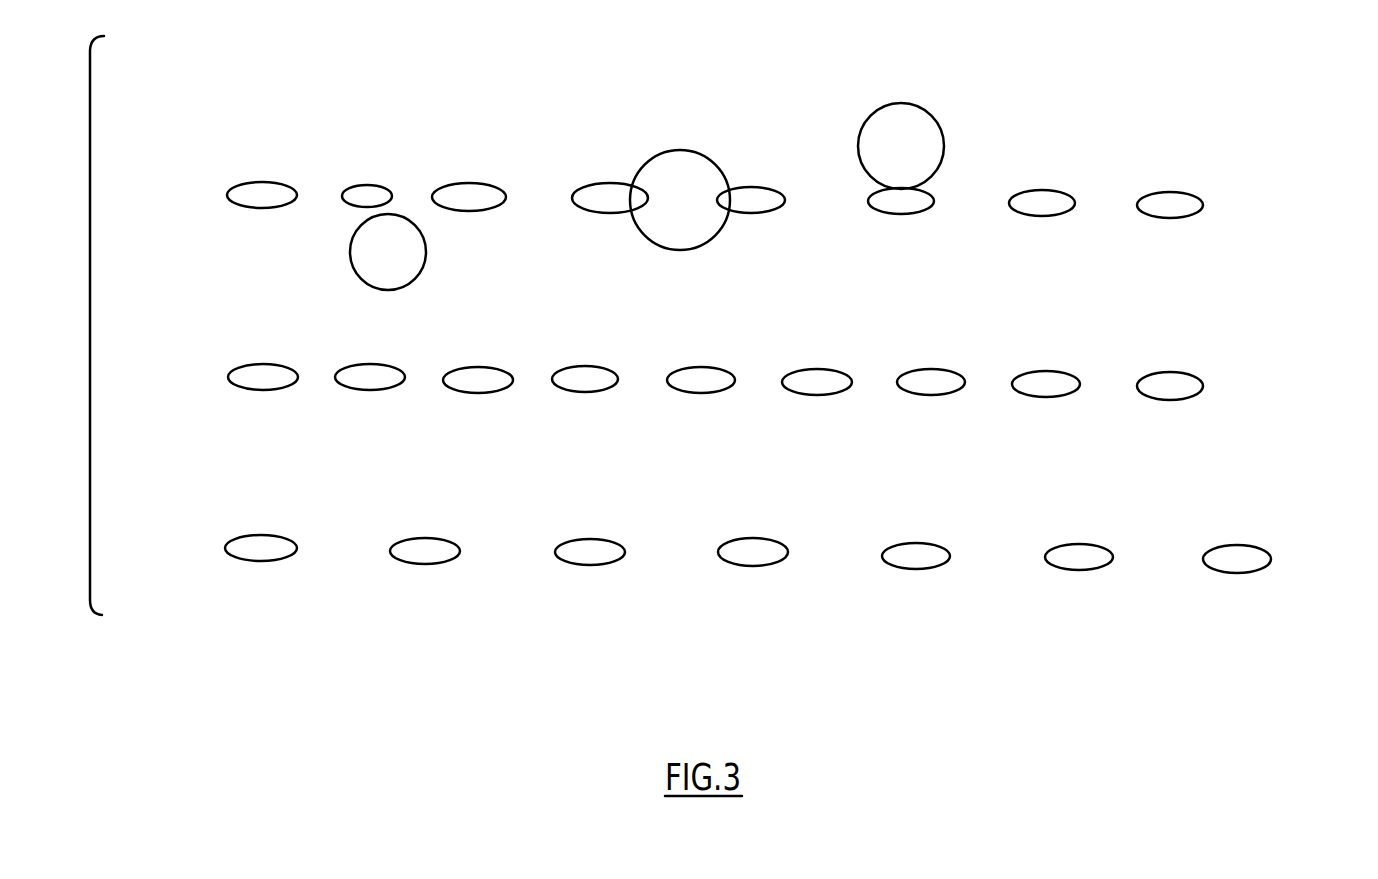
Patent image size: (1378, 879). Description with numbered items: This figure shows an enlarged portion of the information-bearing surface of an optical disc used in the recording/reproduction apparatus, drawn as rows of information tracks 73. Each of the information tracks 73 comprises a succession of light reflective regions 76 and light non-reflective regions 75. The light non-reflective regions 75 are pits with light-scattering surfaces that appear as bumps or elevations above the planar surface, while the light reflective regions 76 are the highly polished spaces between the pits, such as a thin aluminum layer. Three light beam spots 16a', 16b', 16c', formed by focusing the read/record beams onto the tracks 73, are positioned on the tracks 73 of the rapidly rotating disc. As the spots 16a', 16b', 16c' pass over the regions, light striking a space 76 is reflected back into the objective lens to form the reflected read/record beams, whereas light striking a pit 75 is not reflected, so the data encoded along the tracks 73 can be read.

The light beam spot 16a' is at (654, 184).
The light beam spot 16b' is at (940, 132).
The light beam spot 16c' is at (425, 264).
The information tracks 73 is at (1228, 236).
The light non-reflective regions 75 is at (1046, 190).
The light reflective regions 76 is at (1107, 228).